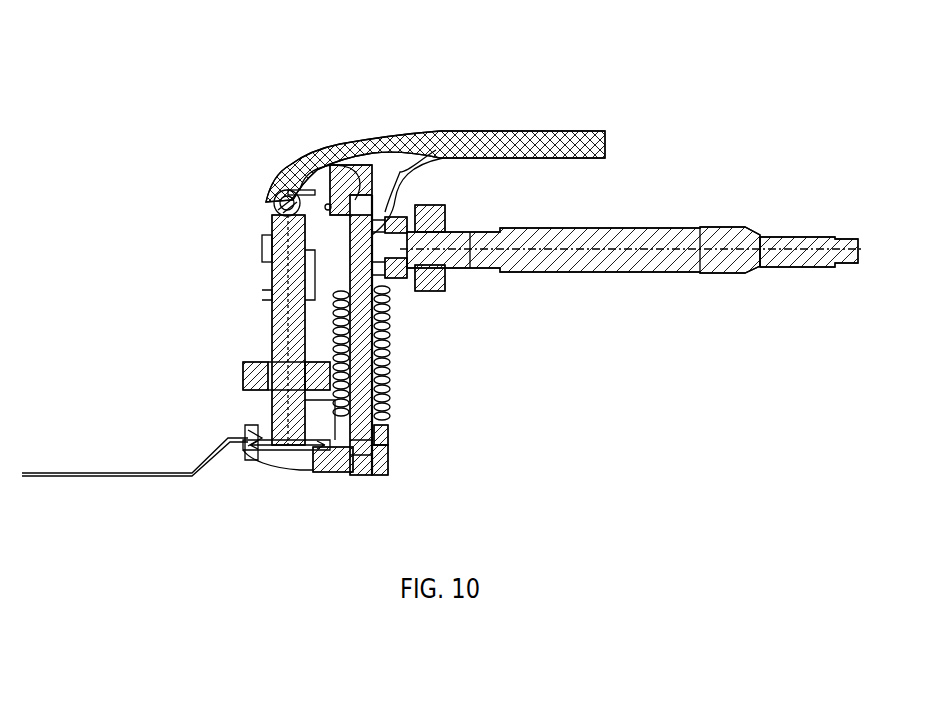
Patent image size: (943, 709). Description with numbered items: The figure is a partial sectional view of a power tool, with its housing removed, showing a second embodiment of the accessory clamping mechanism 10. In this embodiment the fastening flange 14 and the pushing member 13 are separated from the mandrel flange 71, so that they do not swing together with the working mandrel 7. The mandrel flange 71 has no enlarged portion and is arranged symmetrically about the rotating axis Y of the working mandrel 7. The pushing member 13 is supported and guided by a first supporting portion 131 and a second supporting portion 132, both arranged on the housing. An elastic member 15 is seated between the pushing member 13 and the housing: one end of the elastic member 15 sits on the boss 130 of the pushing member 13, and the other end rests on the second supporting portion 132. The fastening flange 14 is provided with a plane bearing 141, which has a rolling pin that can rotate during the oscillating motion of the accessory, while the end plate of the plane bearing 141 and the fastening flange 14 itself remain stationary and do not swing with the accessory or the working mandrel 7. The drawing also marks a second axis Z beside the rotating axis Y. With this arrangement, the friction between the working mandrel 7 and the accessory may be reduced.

The accessory clamping mechanism 10 is at (262, 105).
The boss 130 is at (275, 217).
The first supporting portion 131 is at (378, 278).
The working mandrel 7 is at (258, 304).
The mandrel flange 71 is at (250, 432).
The rotating axis Y is at (268, 458).
The plane bearing 141 is at (298, 464).
The axis Z is at (361, 476).
The pushing member 13 is at (385, 407).
The elastic member 15 is at (390, 353).
The second supporting portion 132 is at (390, 440).
The fastening flange 14 is at (372, 445).